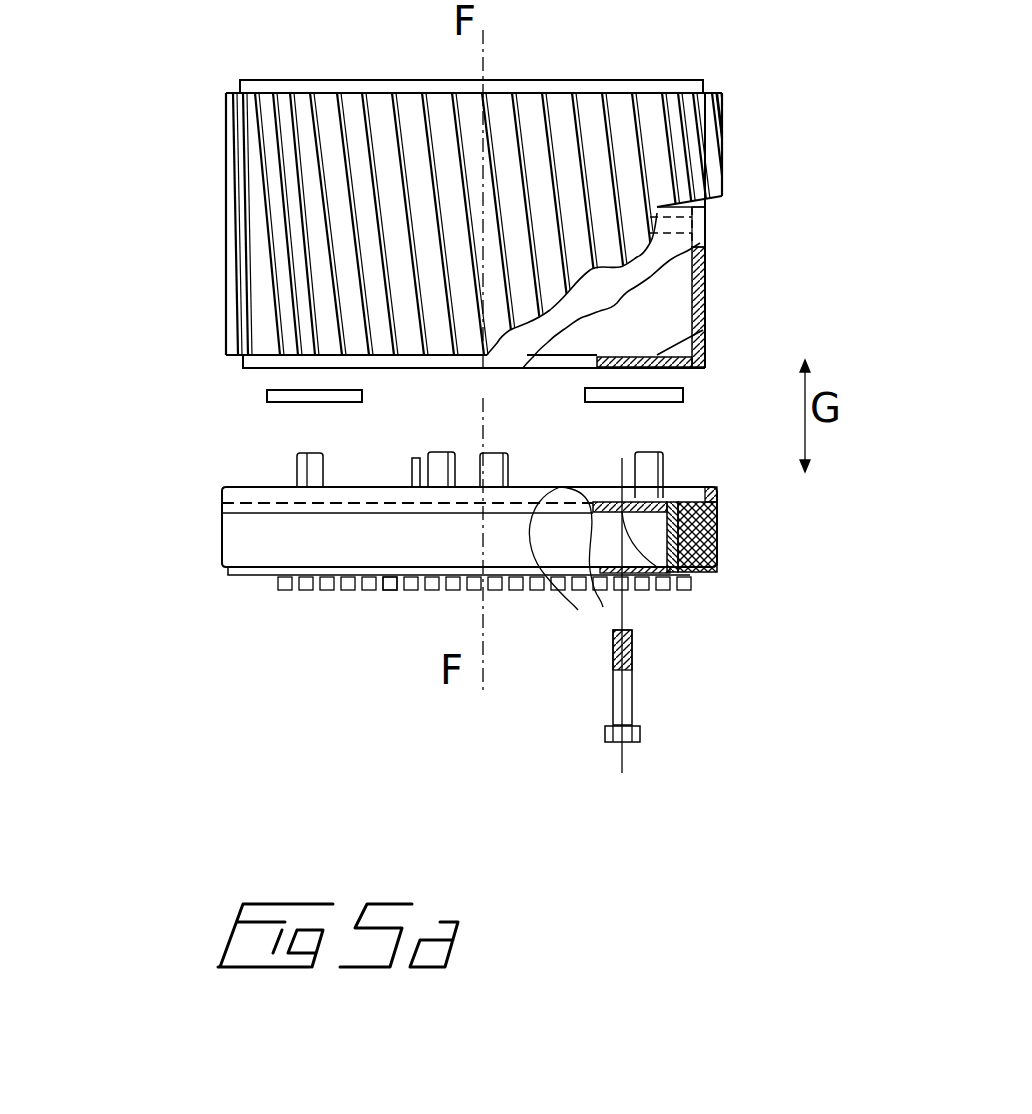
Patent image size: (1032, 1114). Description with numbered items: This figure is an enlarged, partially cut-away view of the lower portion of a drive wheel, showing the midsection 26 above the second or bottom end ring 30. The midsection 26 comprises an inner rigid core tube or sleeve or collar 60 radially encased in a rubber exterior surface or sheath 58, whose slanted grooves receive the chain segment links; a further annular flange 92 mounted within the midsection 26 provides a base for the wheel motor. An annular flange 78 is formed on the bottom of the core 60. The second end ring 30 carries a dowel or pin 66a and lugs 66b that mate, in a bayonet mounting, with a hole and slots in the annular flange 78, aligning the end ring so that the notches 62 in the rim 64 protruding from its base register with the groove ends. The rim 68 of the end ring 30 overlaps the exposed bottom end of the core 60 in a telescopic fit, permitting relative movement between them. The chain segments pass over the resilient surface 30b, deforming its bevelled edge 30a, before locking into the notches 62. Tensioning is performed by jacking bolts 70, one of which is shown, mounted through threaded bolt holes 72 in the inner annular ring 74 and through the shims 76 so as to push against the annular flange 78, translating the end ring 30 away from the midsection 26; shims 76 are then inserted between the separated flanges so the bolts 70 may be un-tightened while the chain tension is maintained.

The midsection 26 is at (762, 151).
The annular flange 92 is at (703, 224).
The rubber exterior surface or sheath 58 is at (740, 268).
The core tube or sleeve or collar 60 is at (703, 300).
The annular flange 78 is at (703, 330).
The shims 76 is at (267, 393).
The dowel or pin 66a is at (410, 472).
The lugs 66b is at (297, 465).
The second or bottom end ring 30 is at (210, 495).
The resilient surface 30b is at (240, 530).
The bevelled edge 30a is at (227, 573).
The rim 64 is at (265, 607).
The notches 62 is at (384, 592).
The inner annular ring 74 is at (556, 572).
The rim 68 is at (718, 490).
The threaded bolt holes 72 is at (677, 580).
The jacking bolts 70 is at (632, 702).